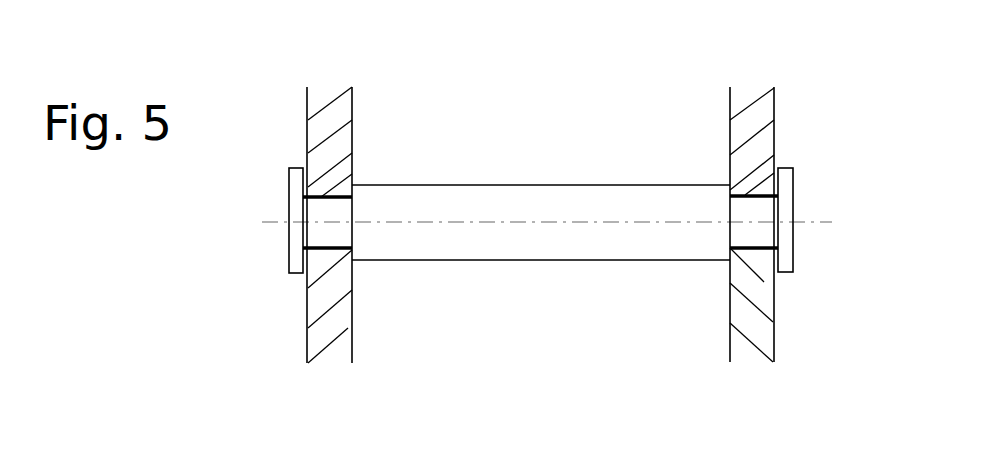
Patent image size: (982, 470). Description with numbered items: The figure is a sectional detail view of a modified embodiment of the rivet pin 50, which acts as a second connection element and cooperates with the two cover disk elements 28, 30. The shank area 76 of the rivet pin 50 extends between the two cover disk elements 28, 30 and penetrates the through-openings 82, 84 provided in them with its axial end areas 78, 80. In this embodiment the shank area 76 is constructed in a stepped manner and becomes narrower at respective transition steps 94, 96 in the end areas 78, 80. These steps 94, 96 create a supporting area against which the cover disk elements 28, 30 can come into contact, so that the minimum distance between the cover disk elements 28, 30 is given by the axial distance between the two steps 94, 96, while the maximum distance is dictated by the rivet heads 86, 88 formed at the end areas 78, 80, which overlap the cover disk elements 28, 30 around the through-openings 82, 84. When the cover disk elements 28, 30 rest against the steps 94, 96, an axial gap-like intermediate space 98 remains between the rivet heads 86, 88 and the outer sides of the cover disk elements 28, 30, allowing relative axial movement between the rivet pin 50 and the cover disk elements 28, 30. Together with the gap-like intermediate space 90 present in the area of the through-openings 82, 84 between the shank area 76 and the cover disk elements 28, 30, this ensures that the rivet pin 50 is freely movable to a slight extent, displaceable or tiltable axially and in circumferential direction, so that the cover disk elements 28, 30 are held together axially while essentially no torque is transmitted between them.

The cover disk element 28 is at (322, 333).
The cover disk element 30 is at (768, 97).
The rivet pin 50 is at (520, 150).
The shank area 76 is at (573, 185).
The axial end area 78 is at (283, 130).
The axial end area 80 is at (815, 150).
The through-opening 82 is at (325, 196).
The through-opening 84 is at (758, 195).
The rivet head 86 is at (298, 211).
The rivet head 88 is at (790, 207).
The gap-like intermediate space 90 is at (343, 272).
The transition step 94 is at (353, 190).
The transition step 96 is at (745, 212).
The axial gap-like intermediate space 98 is at (301, 289).